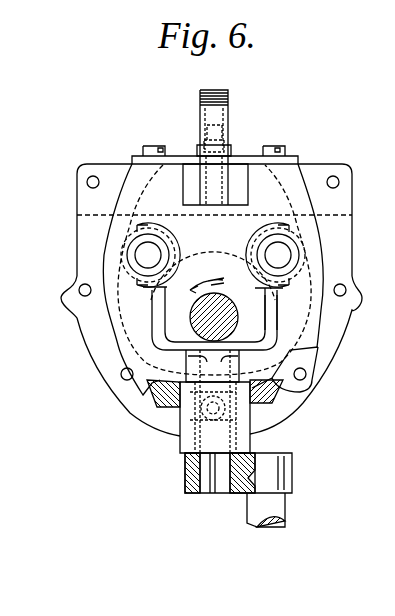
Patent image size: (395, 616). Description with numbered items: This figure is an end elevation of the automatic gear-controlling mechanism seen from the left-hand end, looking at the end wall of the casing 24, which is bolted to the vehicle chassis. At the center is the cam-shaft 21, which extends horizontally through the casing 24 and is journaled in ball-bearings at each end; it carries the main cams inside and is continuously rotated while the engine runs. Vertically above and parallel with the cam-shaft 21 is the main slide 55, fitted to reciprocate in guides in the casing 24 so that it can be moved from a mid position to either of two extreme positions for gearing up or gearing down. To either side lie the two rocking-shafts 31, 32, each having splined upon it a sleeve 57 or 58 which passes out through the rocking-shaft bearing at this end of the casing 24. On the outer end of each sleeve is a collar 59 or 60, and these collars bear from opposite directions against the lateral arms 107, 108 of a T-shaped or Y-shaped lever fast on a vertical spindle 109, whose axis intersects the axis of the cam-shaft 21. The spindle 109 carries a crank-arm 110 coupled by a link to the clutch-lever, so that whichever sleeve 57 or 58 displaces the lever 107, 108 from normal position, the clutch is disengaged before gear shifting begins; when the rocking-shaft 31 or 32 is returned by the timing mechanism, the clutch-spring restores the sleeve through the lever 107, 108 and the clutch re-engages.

The cam-shaft 21 is at (226, 311).
The casing 24 is at (305, 350).
The rocking-shaft 31 is at (278, 255).
The rocking-shaft 32 is at (148, 255).
The slide 55 is at (193, 178).
The sleeve 57 is at (305, 232).
The sleeve 58 is at (130, 238).
The collar 59 is at (315, 262).
The collar 60 is at (108, 262).
The lateral arm 107 is at (268, 320).
The lateral arm 108 is at (158, 313).
The vertical spindle 109 is at (192, 372).
The crank-arm 110 is at (288, 465).